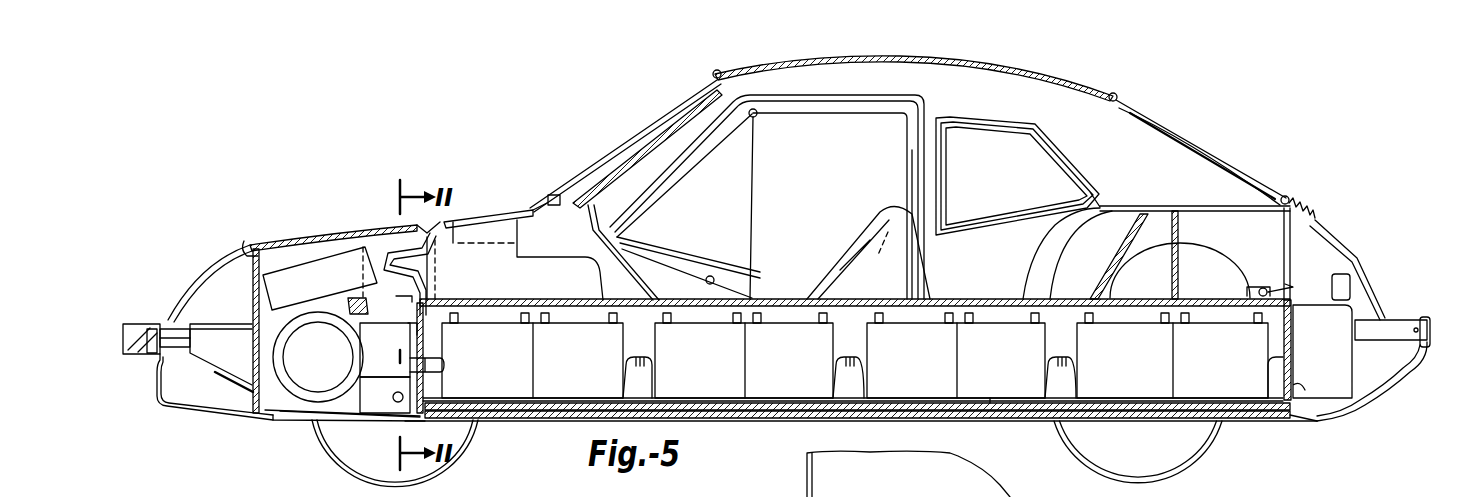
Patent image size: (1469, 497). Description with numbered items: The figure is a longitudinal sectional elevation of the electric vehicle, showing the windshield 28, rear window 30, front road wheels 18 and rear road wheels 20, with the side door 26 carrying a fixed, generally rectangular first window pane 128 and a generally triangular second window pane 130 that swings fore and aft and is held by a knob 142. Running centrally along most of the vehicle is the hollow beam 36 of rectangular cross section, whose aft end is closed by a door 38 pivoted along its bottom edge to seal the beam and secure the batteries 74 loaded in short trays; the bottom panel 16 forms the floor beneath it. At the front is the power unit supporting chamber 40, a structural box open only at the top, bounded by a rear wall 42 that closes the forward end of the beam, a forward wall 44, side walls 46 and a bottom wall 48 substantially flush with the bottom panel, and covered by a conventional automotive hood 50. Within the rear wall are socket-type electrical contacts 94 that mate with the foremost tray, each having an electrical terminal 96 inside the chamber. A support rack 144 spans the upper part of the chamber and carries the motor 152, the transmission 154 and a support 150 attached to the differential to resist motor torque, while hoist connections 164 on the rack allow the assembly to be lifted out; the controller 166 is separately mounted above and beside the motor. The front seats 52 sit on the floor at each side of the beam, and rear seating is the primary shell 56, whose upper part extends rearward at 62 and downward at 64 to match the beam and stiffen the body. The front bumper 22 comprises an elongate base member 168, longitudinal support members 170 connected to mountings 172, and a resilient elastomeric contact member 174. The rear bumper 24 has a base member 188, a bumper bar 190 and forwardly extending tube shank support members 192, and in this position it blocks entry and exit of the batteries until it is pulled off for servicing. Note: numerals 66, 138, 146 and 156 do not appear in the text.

The bottom panel 16 is at (556, 420).
The front road wheels 18 is at (462, 447).
The rear road wheels 20 is at (1210, 447).
The front bumper 22 is at (150, 336).
The rear bumper 24 is at (1386, 315).
The side door 26 is at (932, 118).
The windshield 28 is at (645, 140).
The rear window 30 is at (1190, 150).
The hollow beam 36 is at (942, 298).
The door 38 is at (1288, 372).
The power unit supporting chamber 40 is at (283, 442).
The rear wall 42 is at (422, 305).
The forward wall 44 is at (236, 331).
The side walls 46 is at (282, 280).
The bottom wall 48 is at (301, 440).
The automotive hood 50 is at (337, 222).
The front seats 52 is at (888, 232).
The primary shell 56 is at (1144, 207).
The rearward extending portion of shell 62 is at (1224, 206).
The downward extending portion of shell 64 is at (1180, 248).
The rear floor 66 is at (1284, 420).
The batteries 74 is at (995, 380).
The electrical contacts 94 is at (436, 364).
The electrical terminal 96 is at (408, 350).
The first window pane 128 is at (892, 177).
The second window pane 130 is at (790, 140).
The lock rod 138 is at (702, 264).
The knob 142 is at (706, 278).
The support rack 144 is at (357, 298).
The mounting bracket 146 is at (390, 413).
The support 150 is at (403, 380).
The motor 152 is at (265, 345).
The transmission 154 is at (230, 414).
The mounting bracket 156 is at (417, 328).
The hoist connections 164 is at (405, 298).
The controller 166 is at (292, 237).
The elongate base member 168 is at (143, 332).
The support members 170 is at (176, 348).
The mountings 172 is at (222, 324).
The contact member 174 is at (125, 355).
The base member 188 is at (1430, 320).
The bumper bar 190 is at (1432, 350).
The support members 192 is at (1392, 324).